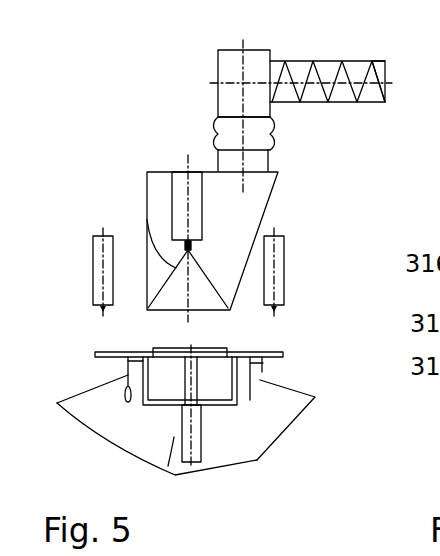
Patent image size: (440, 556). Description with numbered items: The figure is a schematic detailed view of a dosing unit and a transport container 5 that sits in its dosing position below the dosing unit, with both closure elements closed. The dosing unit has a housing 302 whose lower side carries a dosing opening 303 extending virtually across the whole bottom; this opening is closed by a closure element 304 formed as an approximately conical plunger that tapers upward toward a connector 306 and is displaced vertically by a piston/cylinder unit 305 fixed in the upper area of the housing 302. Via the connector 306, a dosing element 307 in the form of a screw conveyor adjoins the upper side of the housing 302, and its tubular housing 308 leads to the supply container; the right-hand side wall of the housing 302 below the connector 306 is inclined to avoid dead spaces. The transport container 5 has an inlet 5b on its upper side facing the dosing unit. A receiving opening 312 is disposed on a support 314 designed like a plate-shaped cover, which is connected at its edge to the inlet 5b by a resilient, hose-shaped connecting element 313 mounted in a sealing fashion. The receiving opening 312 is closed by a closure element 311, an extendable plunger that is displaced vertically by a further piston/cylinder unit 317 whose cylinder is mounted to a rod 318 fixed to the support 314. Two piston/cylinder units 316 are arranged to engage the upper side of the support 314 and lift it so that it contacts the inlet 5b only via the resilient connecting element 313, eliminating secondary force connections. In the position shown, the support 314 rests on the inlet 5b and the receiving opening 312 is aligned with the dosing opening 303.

The housing 302 is at (147, 182).
The dosing opening 303 is at (203, 312).
The closure element 304 is at (147, 225).
The piston/cylinder unit 305 is at (172, 187).
The connector 306 is at (260, 160).
The dosing element 307 is at (297, 61).
The tubular housing 308 is at (382, 61).
The closure element 311 is at (167, 348).
The receiving opening 312 is at (162, 372).
The resilient connecting element 313 is at (293, 418).
The support 314 is at (270, 345).
The piston/cylinder units 316 is at (93, 268).
The piston/cylinder unit 317 is at (167, 465).
The rod 318 is at (222, 408).
The transport container 5 is at (268, 433).
The inlet 5b is at (265, 366).